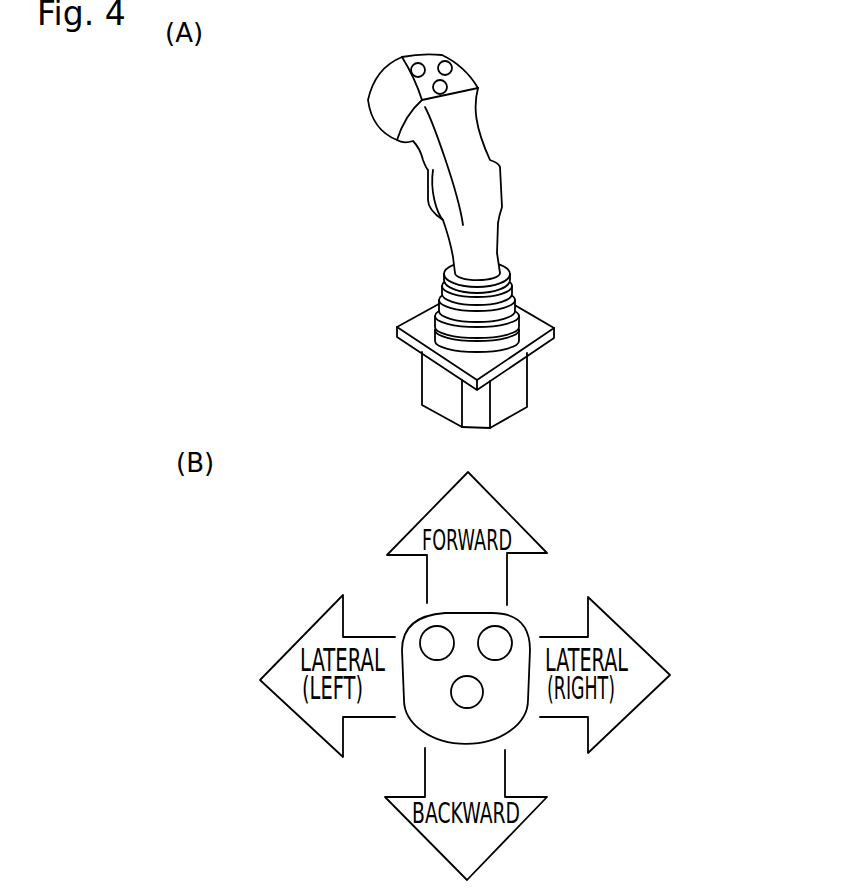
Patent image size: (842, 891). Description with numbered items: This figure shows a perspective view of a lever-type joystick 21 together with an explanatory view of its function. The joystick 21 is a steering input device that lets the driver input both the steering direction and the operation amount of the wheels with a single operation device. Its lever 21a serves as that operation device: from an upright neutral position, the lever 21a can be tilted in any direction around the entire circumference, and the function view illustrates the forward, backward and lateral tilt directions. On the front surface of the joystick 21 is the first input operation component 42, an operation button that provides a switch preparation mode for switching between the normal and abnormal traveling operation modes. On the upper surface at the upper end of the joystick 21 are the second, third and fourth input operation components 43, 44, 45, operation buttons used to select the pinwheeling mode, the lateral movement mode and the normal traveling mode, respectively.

The joystick 21 is at (469, 423).
The lever 21a is at (472, 237).
The first input operation component 42 is at (427, 195).
The second input operation component 43 is at (445, 68).
The third input operation component 44 is at (417, 70).
The fourth input operation component 45 is at (440, 87).